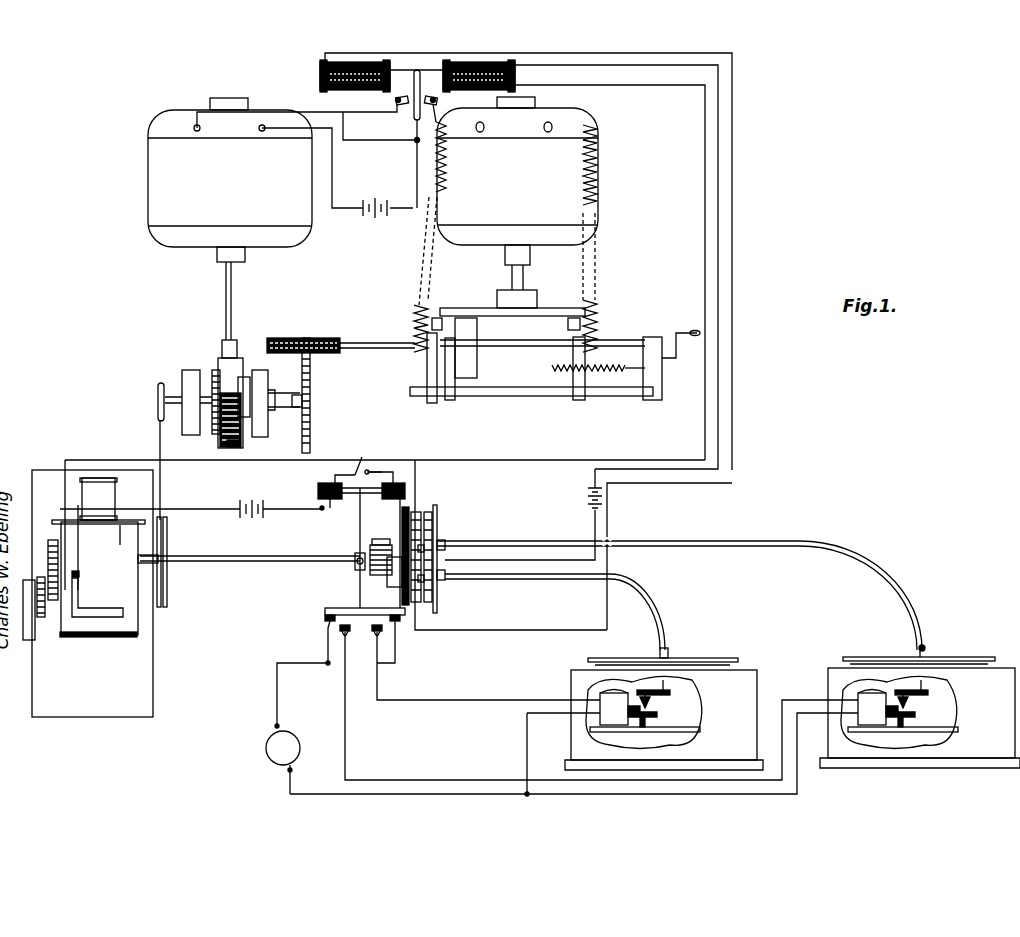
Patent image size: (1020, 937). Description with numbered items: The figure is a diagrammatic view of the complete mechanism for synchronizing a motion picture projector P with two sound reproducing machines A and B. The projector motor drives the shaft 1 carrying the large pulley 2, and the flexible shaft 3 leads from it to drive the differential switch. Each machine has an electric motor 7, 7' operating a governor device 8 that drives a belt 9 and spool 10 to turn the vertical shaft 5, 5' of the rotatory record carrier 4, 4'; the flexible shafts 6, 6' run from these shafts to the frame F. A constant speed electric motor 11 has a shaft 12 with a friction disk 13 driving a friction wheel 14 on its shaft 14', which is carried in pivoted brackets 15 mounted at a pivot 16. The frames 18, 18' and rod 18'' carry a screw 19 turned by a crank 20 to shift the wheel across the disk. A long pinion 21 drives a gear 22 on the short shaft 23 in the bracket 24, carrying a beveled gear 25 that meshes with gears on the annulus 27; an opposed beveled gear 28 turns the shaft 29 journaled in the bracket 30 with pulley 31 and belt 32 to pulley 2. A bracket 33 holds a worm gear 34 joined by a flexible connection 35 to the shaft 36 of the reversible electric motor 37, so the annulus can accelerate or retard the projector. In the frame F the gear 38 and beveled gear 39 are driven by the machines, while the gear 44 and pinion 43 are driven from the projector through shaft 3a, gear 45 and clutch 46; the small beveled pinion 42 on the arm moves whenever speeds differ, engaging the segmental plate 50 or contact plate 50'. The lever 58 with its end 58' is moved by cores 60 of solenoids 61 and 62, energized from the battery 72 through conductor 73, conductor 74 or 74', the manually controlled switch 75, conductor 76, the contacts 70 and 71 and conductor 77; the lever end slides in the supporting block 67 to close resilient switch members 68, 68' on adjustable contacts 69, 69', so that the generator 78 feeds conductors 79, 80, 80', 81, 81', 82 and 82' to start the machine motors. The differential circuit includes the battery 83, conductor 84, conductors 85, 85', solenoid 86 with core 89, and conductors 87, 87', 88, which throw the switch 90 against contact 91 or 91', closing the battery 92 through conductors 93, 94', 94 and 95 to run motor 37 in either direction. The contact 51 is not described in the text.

The shaft 1 is at (135, 552).
The large pulley 2 is at (168, 552).
The flexible shaft 3 is at (215, 562).
The shaft 3a is at (383, 549).
The rotatory record carrier 4 is at (919, 647).
The rotatory record carrier 4' is at (684, 652).
The vertical shaft 5 is at (944, 641).
The vertical shaft 5' is at (684, 643).
The flexible shaft 6 is at (699, 594).
The flexible shaft 6' is at (575, 612).
The electric motor 7 is at (895, 720).
The electric motor 7' is at (638, 723).
The governor device 8 is at (657, 710).
The belt 9 is at (665, 681).
The spool 10 is at (672, 695).
The constant speed electric motor 11 is at (600, 168).
The shaft 12 is at (524, 280).
The friction disk 13 is at (545, 310).
The friction wheel 14 is at (506, 345).
The shaft 14' is at (542, 329).
The brackets 15 is at (573, 362).
The pivot 16 is at (515, 73).
The frame 18 is at (667, 368).
The frame 18' is at (455, 378).
The rod 18'' is at (531, 405).
The screw 19 is at (600, 375).
The crank 20 is at (680, 330).
The long pinion 21 is at (310, 338).
The gear 22 is at (310, 380).
The short shaft 23 is at (310, 395).
The bracket 24 is at (264, 405).
The beveled gear 25 is at (245, 370).
The annulus 27 is at (242, 445).
The beveled gear 28 is at (222, 430).
The shaft 29 is at (212, 375).
The bracket 30 is at (185, 372).
The pulley 31 is at (158, 388).
The belt 32 is at (158, 438).
The bracket 33 is at (250, 385).
The worm gear 34 is at (222, 410).
The flexible connection 35 is at (236, 345).
The shaft 36 is at (233, 280).
The reversible electric motor 37 is at (308, 222).
The gear 38 is at (428, 520).
The beveled gear 39 is at (430, 510).
The small beveled pinion 42 is at (392, 587).
The beveled pinion 43 is at (415, 510).
The gear 44 is at (408, 508).
The gear 45 is at (355, 568).
The clutch 46 is at (378, 538).
The segmental plate 50 is at (459, 586).
The contact plate 50' is at (478, 525).
The valve stem 51 is at (470, 544).
The lever 58 is at (359, 548).
The lever end 58' is at (346, 602).
The cores 60 is at (356, 503).
The solenoid 61 is at (318, 485).
The solenoid 62 is at (394, 474).
The supporting block 67 is at (325, 612).
The resilient switch member 68 is at (308, 628).
The resilient switch member 68' is at (433, 616).
The adjustable contact member 69 is at (315, 643).
The adjustable contact member 69' is at (408, 637).
The contact 70 is at (80, 572).
The contact 71 is at (80, 578).
The battery 72 is at (252, 518).
The conductor 73 is at (288, 511).
The conductor 74 is at (339, 448).
The conductor 74' is at (386, 450).
The manually controlled switch 75 is at (364, 468).
The conductor 76 is at (234, 461).
The conductor 77 is at (188, 508).
The generator 78 is at (290, 742).
The conductor 79 is at (277, 700).
The conductor 80 is at (302, 678).
The conductor 80' is at (411, 651).
The conductor 81 is at (601, 706).
The conductor 81' is at (488, 666).
The conductor 82 is at (574, 754).
The conductor 82' is at (542, 753).
The battery 83 is at (588, 494).
The conductor 84 is at (593, 522).
The conductor 85 is at (532, 616).
The conductor 85' is at (511, 530).
The solenoid 86 is at (318, 70).
The conductor 87 is at (550, 260).
The conductor 87' is at (609, 272).
The conductor 88 is at (732, 230).
The core 89 is at (392, 84).
The switch 90 is at (412, 112).
The contact 91 is at (303, 115).
The contact 91' is at (448, 106).
The battery 92 is at (380, 222).
The conductor 93 is at (413, 168).
The conductor 94 is at (325, 168).
The conductor 94' is at (294, 97).
The conductor 95 is at (332, 170).
The sound reproducing machine A is at (828, 672).
The sound reproducing machine B is at (571, 672).
The frame F is at (438, 528).
The motion picture projector P is at (138, 532).